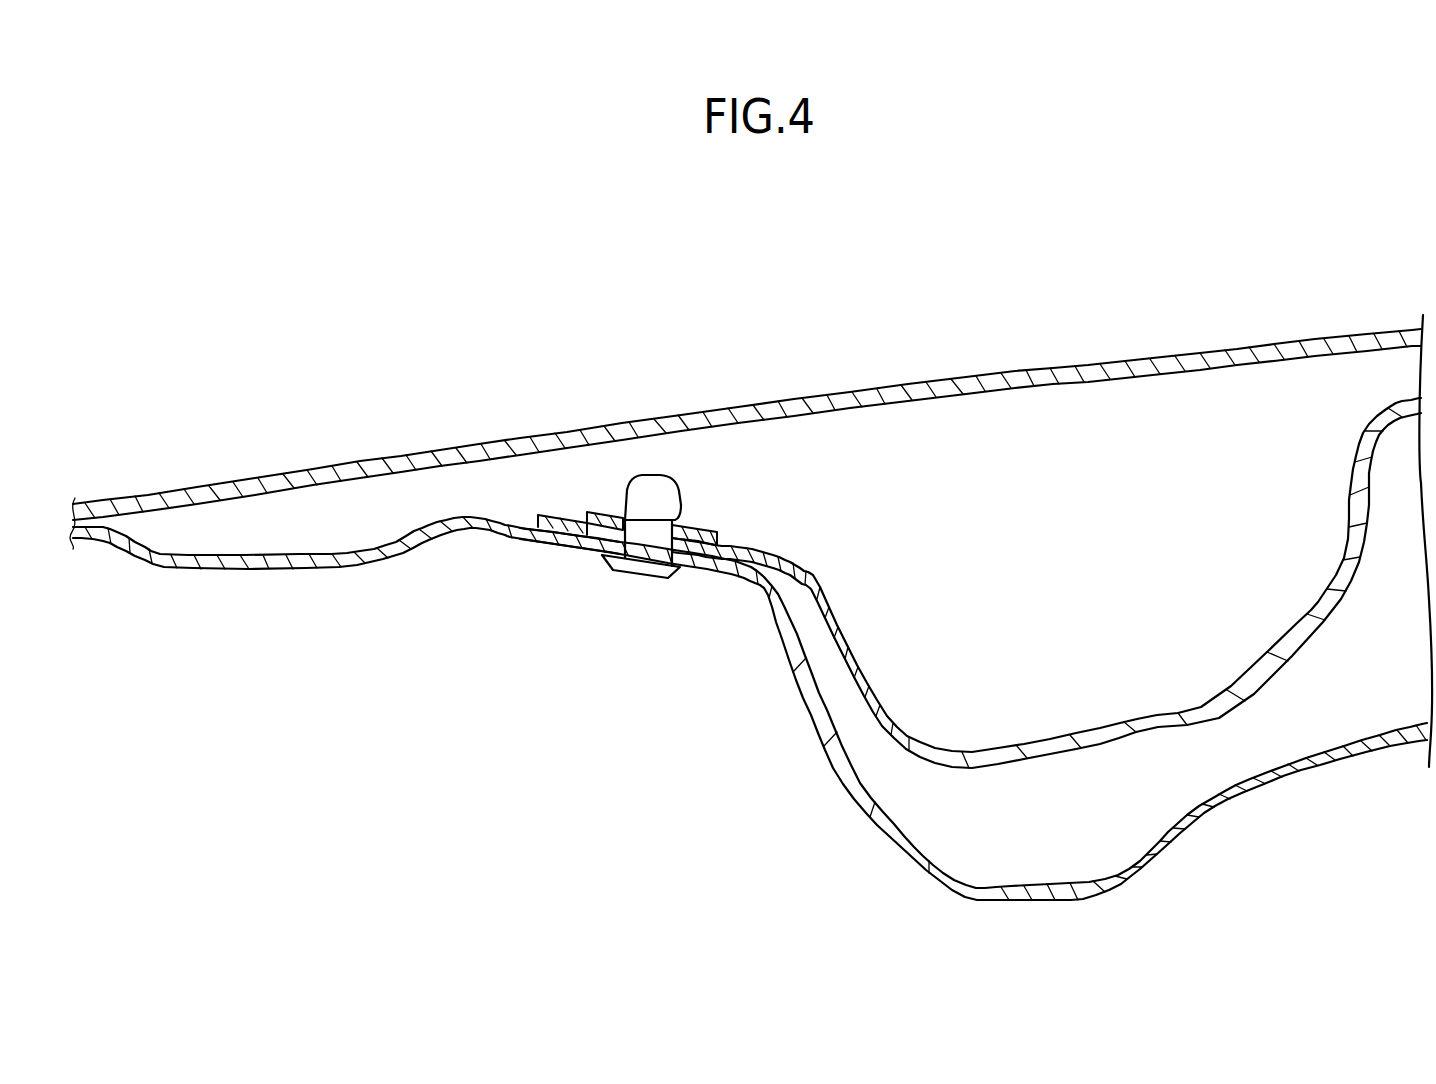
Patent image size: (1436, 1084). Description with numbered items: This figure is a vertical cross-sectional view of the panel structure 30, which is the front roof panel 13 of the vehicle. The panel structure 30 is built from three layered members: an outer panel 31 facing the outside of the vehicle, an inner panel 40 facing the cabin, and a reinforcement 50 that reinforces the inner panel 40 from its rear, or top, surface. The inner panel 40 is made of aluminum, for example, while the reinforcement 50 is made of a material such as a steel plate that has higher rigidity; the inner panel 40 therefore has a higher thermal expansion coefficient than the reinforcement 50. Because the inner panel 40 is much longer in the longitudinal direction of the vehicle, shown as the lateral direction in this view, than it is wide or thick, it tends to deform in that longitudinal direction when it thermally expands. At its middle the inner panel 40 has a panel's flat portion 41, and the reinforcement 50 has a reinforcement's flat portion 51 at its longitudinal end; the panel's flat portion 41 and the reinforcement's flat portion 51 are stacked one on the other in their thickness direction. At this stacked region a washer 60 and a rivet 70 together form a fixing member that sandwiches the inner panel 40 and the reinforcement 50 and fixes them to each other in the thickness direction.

The front roof panel 13 is at (751, 470).
The panel structure 30 is at (1425, 541).
The outer panel 31 is at (1071, 362).
The inner panel 40 is at (750, 708).
The panel's flat portion 41 is at (540, 543).
The reinforcement 50 is at (818, 562).
The reinforcement's flat portion 51 is at (566, 523).
The washer 60 is at (701, 533).
The rivet 70 is at (683, 590).